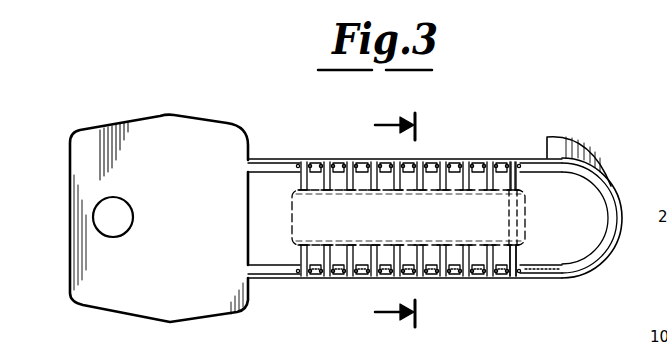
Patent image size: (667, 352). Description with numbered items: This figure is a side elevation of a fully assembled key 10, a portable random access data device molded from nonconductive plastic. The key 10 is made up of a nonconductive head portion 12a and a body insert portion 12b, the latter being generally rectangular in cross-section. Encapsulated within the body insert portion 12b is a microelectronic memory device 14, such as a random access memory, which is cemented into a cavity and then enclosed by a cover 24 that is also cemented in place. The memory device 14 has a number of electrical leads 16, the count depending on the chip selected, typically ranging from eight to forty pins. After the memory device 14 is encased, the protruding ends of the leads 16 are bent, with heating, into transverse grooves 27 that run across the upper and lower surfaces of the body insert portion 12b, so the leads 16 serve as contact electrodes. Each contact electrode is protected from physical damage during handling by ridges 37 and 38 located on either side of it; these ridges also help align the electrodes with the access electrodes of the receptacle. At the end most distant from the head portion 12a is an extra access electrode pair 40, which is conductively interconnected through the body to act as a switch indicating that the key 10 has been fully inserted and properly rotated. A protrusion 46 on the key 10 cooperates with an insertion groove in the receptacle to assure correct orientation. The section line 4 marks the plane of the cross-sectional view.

The key 10 is at (483, 84).
The head portion 12a is at (137, 119).
The body insert portion 12b is at (277, 159).
The microelectronic memory device 14 is at (478, 233).
The electrical leads 16 is at (300, 188).
The cover 24 is at (347, 220).
The transverse grooves 27 is at (414, 158).
The ridge 37 is at (510, 172).
The ridge 38 is at (515, 160).
The extra access electrode 40 is at (512, 212).
The protrusion 46 is at (553, 136).
The section line 4- 4 is at (404, 220).